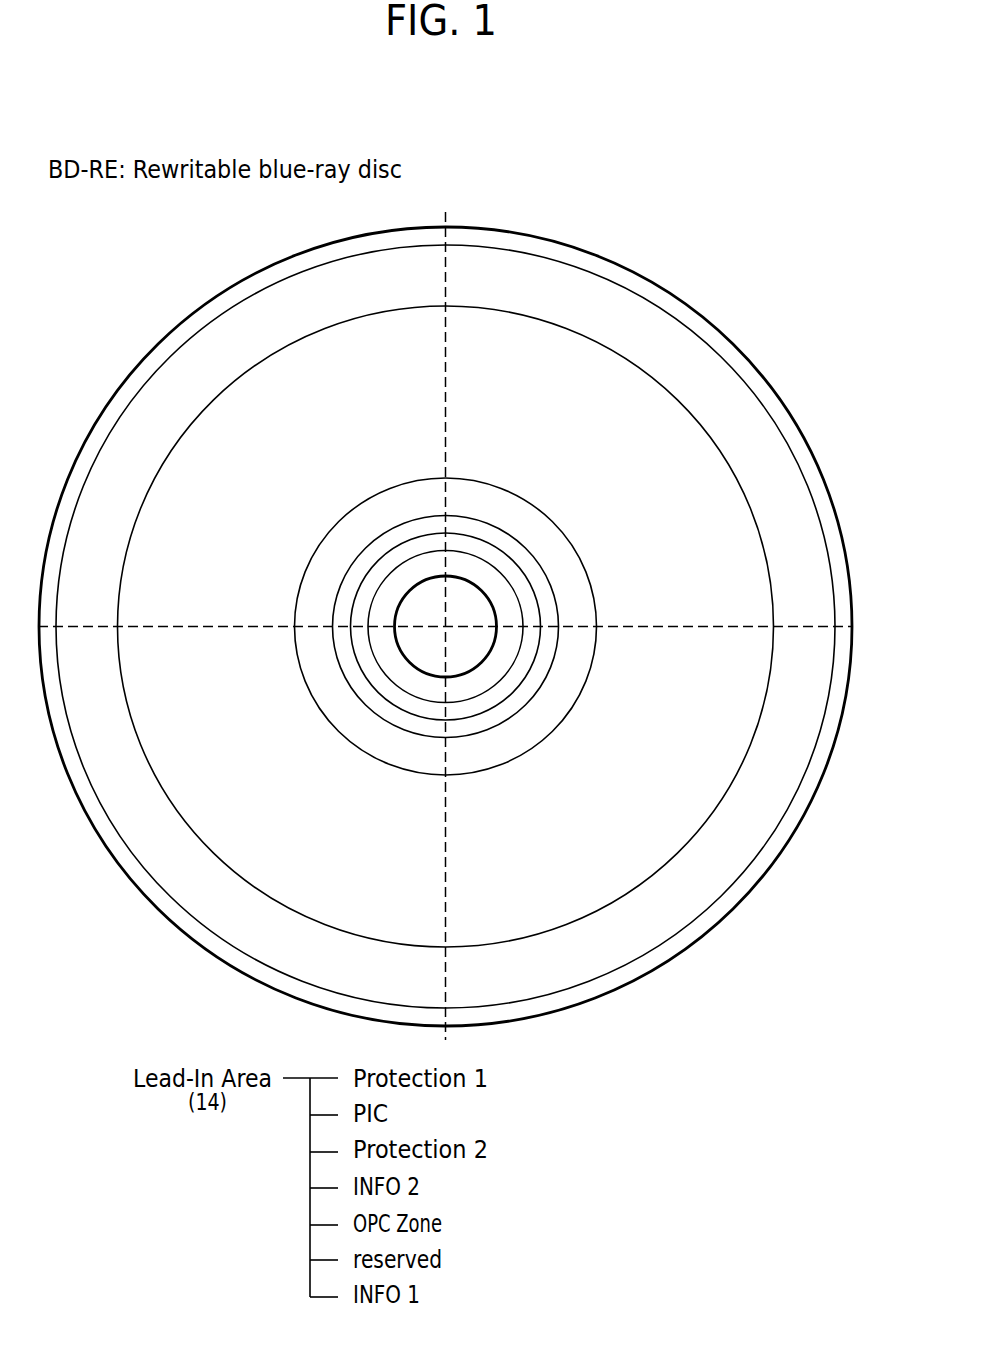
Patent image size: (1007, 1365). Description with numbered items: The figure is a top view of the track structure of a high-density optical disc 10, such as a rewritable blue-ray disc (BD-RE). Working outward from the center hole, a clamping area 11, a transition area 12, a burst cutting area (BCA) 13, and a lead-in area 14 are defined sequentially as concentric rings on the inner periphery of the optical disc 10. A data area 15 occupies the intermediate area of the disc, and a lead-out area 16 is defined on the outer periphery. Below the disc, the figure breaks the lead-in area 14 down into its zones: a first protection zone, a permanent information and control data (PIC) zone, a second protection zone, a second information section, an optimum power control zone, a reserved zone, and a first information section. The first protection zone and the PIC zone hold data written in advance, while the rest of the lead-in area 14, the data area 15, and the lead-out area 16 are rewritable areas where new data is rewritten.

The high-density optical disc 10 is at (678, 218).
The clamping area 11 is at (376, 579).
The transition area 12 is at (512, 572).
The burst cutting area (BCA) 13 is at (520, 621).
The lead-in area 14 is at (395, 655).
The data area 15 is at (446, 626).
The lead-out area 16 is at (464, 649).